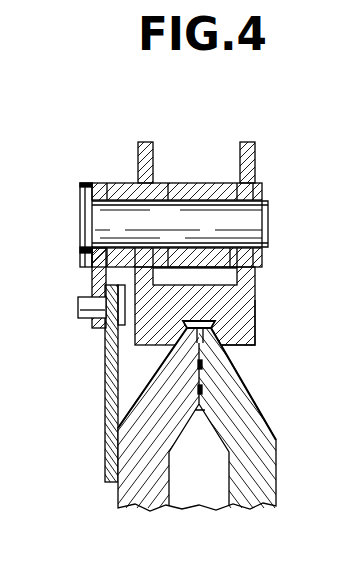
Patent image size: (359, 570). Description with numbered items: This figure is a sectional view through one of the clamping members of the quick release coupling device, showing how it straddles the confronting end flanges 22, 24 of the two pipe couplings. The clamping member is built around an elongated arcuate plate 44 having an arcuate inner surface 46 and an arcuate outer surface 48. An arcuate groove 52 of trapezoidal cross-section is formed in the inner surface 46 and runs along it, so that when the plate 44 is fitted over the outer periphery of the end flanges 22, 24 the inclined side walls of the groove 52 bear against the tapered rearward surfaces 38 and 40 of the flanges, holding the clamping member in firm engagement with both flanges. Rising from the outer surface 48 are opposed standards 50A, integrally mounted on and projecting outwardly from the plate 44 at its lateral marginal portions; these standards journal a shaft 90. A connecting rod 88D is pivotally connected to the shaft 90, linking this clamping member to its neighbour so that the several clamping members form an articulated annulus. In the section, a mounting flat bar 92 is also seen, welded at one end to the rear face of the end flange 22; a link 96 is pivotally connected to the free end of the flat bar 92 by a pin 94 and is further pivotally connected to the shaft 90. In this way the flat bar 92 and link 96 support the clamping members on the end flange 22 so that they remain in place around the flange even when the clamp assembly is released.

The standards 50A is at (146, 142).
The connecting rod 88D is at (186, 183).
The shaft 90 is at (255, 213).
The link 96 is at (98, 282).
The pin 94 is at (78, 302).
The tapered rearward surface 38 is at (128, 354).
The mounting flat bar 92 is at (112, 387).
The end flange 22 is at (130, 421).
The outer surface 48 is at (255, 268).
The arcuate plate 44 is at (255, 298).
The arcuate groove 52 is at (205, 311).
The inner surface 46 is at (243, 348).
The tapered rearward surface 40 is at (228, 345).
The end flange 24 is at (257, 466).